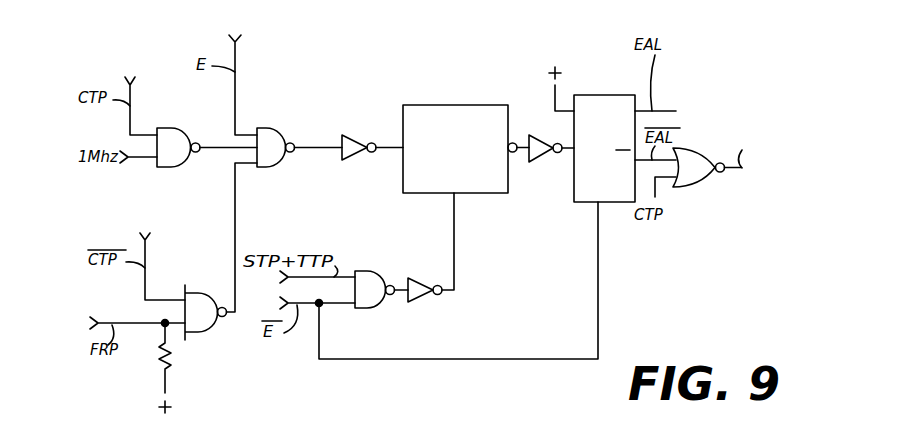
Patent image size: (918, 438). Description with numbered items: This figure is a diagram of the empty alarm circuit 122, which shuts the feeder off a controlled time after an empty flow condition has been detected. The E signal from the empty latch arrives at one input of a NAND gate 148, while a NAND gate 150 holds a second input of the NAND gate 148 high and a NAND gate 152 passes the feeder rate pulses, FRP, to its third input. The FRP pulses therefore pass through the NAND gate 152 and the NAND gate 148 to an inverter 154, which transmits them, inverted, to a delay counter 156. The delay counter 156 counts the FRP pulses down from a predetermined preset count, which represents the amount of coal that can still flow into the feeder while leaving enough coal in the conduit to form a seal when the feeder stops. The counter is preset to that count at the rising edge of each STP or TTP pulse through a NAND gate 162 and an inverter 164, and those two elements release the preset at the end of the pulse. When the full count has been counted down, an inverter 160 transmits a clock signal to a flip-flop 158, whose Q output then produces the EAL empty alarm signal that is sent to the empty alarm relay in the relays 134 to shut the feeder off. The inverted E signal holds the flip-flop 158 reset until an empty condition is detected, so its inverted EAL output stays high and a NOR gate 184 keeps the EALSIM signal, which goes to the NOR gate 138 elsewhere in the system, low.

The empty alarm circuit 122 is at (318, 62).
The NAND gate 148 is at (305, 108).
The NAND gate 150 is at (205, 108).
The NAND gate 152 is at (215, 268).
The inverter 154 is at (374, 110).
The delay counter 156 is at (486, 105).
The flip-flop 158 is at (615, 95).
The inverter 160 is at (538, 162).
The NAND gate 162 is at (370, 271).
The inverter 164 is at (437, 246).
The NOR gate 184 is at (695, 187).
The empty alarm relay in relays (FIG. 2) 134 is at (766, 103).
The NOR gate (FIG. 8) 138 is at (787, 183).